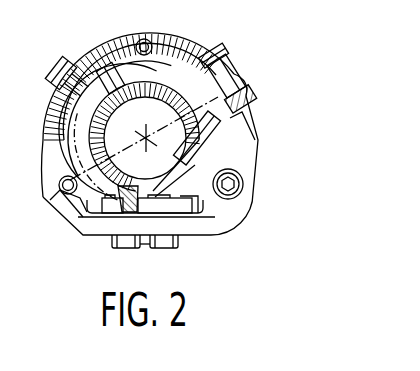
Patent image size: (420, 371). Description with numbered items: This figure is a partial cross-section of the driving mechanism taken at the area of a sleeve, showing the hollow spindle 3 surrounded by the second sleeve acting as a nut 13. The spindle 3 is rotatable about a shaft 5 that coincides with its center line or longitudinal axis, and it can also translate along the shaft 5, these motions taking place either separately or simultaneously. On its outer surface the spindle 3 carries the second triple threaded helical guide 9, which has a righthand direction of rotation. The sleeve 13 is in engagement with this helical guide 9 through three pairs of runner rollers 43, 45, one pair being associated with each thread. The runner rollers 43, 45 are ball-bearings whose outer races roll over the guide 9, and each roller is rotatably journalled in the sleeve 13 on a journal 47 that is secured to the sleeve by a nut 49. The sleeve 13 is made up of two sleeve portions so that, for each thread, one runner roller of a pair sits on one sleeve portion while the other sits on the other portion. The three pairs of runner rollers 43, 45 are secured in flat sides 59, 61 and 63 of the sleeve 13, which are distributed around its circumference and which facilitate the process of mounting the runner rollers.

The hollow spindle 3 is at (96, 148).
The shaft 5 is at (75, 209).
The second triple threaded helical threaded portion or guide 9 is at (95, 94).
The second sleeve acting as nut 13 is at (240, 210).
The runner roller 43 is at (232, 89).
The runner roller 45 is at (106, 72).
The journal 47 is at (200, 80).
The nut 49 is at (245, 73).
The flat side 59 is at (187, 238).
The flat side 61 is at (50, 112).
The flat side 63 is at (257, 131).